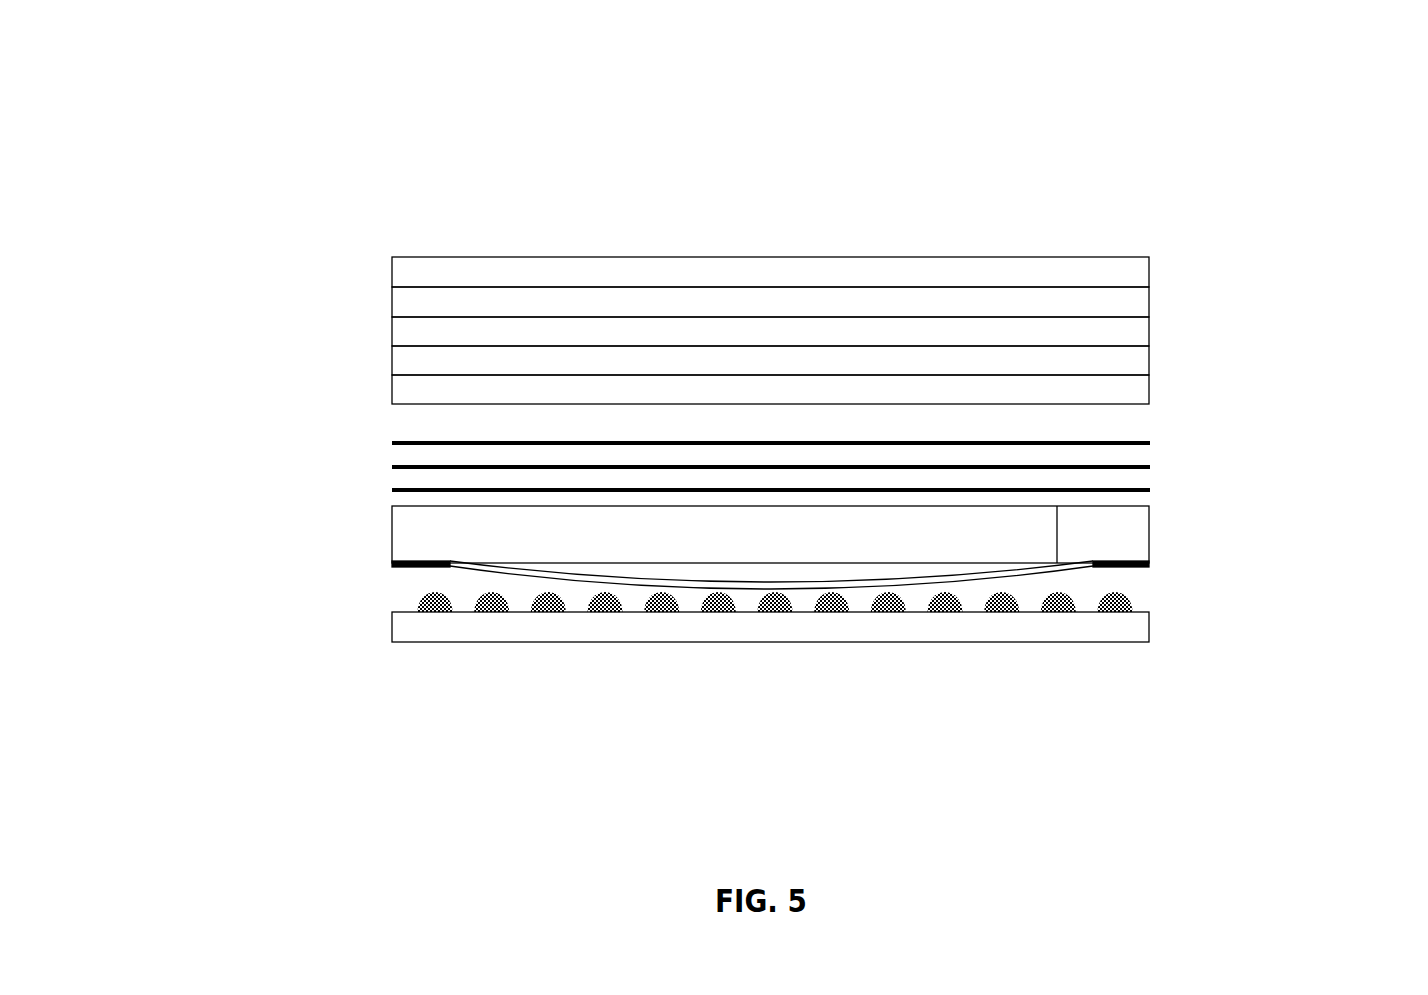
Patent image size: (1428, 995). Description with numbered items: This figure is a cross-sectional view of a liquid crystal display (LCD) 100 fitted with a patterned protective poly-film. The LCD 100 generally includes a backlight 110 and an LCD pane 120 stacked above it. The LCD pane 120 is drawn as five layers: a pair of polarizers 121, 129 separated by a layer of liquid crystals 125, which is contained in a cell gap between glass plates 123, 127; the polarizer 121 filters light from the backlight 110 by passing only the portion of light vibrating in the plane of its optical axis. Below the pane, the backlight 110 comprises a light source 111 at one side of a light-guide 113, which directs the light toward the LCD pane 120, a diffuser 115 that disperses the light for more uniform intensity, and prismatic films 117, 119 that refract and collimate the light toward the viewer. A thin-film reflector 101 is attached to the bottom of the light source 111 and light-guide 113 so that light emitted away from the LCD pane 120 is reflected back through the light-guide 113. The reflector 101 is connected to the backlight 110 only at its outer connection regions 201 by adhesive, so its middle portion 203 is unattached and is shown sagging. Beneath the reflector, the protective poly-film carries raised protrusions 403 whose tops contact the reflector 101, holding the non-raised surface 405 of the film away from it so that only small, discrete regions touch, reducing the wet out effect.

The liquid crystal display (LCD) 100 is at (320, 139).
The LCD pane 120 is at (360, 257).
The polarizer 129 is at (1150, 265).
The glass plate 127 is at (1150, 297).
The layer of liquid crystals 125 is at (1150, 332).
The glass plate 123 is at (1150, 360).
The polarizer 121 is at (1150, 394).
The backlight 110 is at (360, 443).
The prismatic film 119 is at (1150, 443).
The prismatic film 117 is at (1150, 467).
The diffuser 115 is at (1150, 490).
The light-guide 113 is at (737, 545).
The light source 111 is at (1133, 547).
The reflector 101 is at (677, 647).
The connection region 201 is at (390, 568).
The middle portion 203 is at (797, 588).
The protrusions 403 is at (1055, 615).
The non-raised surface 405 is at (688, 612).